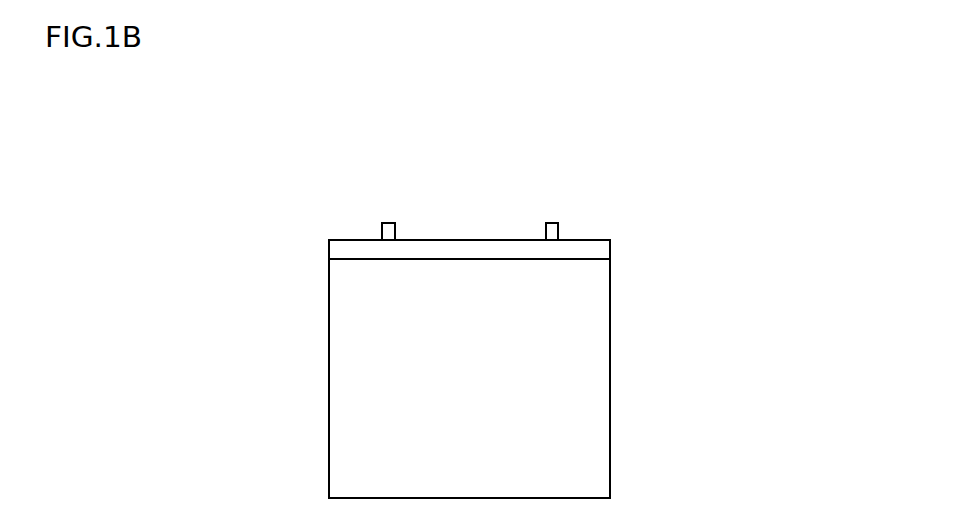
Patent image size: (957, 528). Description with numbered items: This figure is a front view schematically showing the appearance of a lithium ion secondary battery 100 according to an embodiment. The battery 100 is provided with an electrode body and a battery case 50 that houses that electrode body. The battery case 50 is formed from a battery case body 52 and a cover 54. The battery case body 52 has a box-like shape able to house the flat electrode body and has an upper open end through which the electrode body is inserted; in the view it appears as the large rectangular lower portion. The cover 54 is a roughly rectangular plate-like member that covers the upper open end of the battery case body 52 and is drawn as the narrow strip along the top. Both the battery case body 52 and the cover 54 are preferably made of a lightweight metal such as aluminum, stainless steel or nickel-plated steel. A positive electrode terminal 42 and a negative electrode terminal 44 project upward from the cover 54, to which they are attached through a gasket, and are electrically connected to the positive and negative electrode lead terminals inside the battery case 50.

The lithium ion secondary battery 100 is at (687, 248).
The battery case 50 is at (326, 357).
The battery case body 52 is at (337, 430).
The cover 54 is at (337, 250).
The positive electrode terminal 42 is at (390, 228).
The negative electrode terminal 44 is at (553, 228).